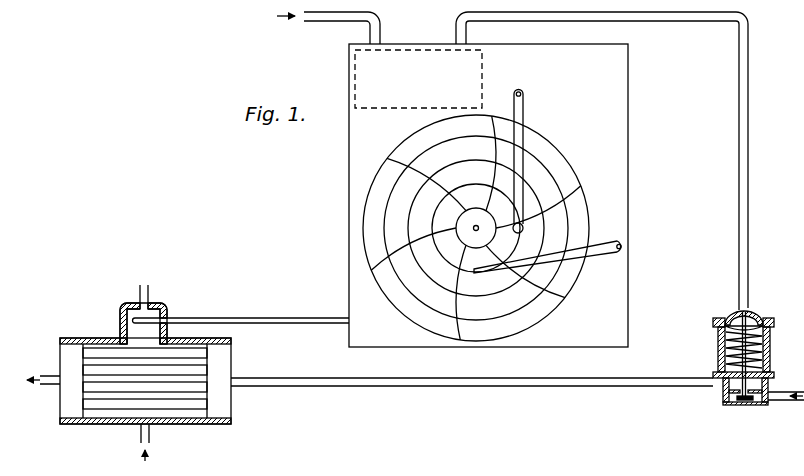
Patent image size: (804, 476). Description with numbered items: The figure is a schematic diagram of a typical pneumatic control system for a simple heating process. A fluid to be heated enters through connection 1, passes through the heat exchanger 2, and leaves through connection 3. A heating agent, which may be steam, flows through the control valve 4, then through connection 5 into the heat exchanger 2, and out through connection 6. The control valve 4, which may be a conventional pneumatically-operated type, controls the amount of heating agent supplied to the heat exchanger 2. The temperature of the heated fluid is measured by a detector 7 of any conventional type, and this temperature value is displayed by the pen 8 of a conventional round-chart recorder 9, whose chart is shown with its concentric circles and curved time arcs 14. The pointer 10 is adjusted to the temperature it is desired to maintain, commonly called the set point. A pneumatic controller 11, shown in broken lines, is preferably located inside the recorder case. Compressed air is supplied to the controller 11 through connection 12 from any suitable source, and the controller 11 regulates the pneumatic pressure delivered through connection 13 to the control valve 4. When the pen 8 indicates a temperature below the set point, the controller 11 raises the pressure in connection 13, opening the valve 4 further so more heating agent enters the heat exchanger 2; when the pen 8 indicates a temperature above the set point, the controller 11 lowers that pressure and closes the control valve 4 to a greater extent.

The connection 1 is at (140, 436).
The heat exchanger 2 is at (186, 424).
The connection 3 is at (149, 292).
The control valve 4 is at (757, 406).
The connection 5 is at (457, 386).
The connection 6 is at (46, 376).
The detector 7 is at (132, 320).
The pen 8 is at (523, 226).
The round-chart recorder 9 is at (621, 303).
The pointer 10 is at (610, 252).
The pneumatic controller 11 is at (357, 80).
The connection 12 is at (320, 22).
The connection 13 is at (739, 166).
The fan blades 14 is at (400, 177).